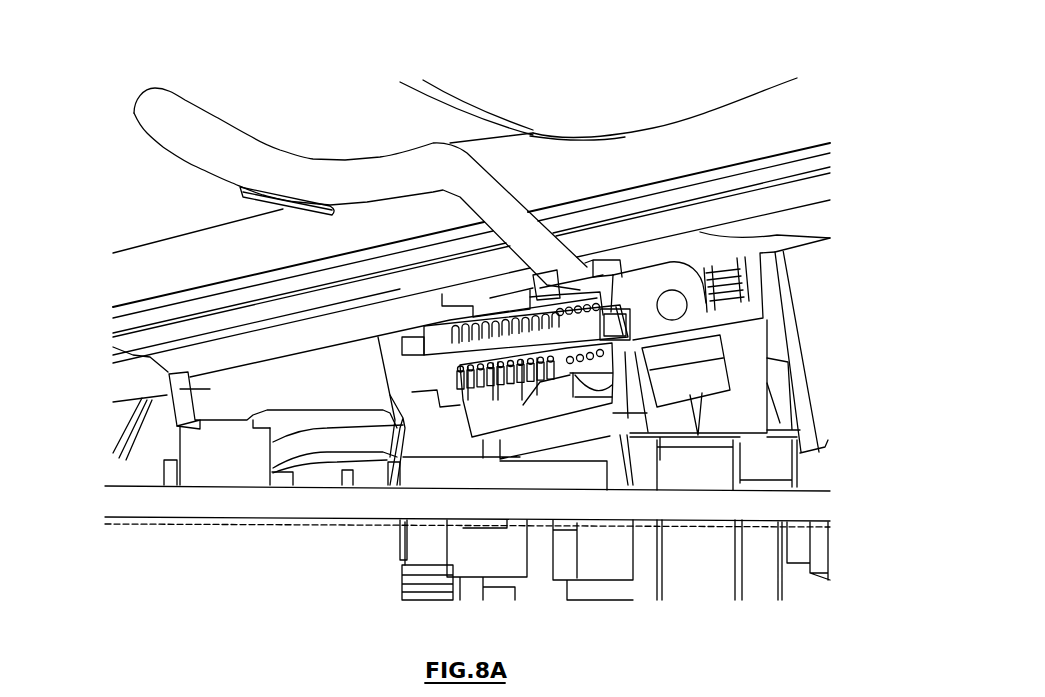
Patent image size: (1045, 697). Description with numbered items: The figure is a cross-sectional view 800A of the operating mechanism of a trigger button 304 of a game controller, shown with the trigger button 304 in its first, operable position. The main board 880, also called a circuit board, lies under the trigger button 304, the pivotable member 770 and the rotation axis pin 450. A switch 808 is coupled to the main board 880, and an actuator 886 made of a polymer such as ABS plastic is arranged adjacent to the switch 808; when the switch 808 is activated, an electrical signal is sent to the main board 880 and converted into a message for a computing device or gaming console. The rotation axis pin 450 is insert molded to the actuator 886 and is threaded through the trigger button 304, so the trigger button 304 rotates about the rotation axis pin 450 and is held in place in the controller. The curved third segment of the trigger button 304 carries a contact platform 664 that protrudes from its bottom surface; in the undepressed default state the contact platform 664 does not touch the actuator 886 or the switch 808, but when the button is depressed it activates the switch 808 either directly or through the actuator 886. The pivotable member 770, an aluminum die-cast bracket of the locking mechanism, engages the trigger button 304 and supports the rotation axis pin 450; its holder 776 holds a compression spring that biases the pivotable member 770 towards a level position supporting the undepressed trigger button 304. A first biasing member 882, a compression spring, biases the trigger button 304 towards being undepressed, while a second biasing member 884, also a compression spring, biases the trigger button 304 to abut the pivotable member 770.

The trigger button 304 is at (206, 95).
The cross-sectional view 800A is at (802, 53).
The contact platform 664 is at (280, 208).
The pivotable member 770 is at (673, 278).
The first biasing member 882 is at (747, 282).
The holder 776 is at (737, 297).
The actuator 886 is at (200, 396).
The switch 808 is at (203, 457).
The rotation axis pin 450 is at (477, 357).
The second biasing member 884 is at (540, 367).
The main board 880 is at (807, 508).